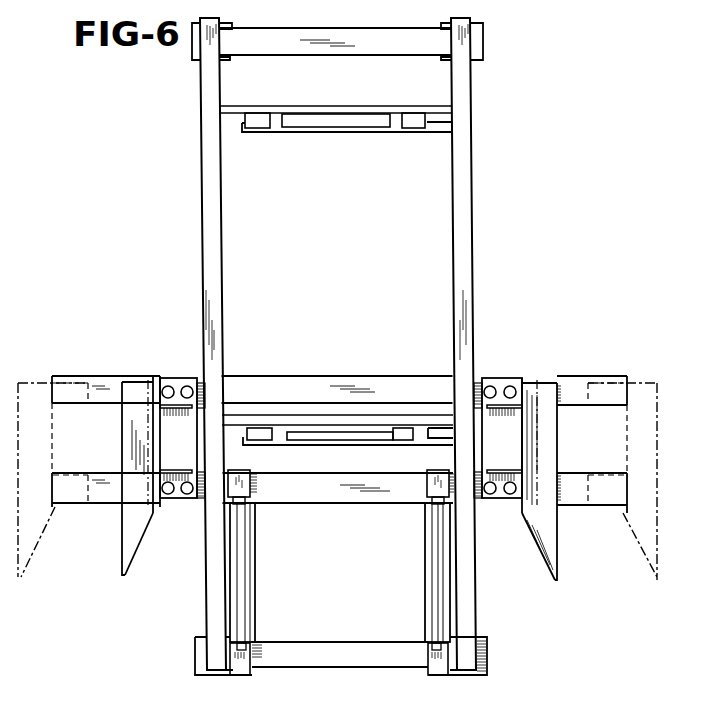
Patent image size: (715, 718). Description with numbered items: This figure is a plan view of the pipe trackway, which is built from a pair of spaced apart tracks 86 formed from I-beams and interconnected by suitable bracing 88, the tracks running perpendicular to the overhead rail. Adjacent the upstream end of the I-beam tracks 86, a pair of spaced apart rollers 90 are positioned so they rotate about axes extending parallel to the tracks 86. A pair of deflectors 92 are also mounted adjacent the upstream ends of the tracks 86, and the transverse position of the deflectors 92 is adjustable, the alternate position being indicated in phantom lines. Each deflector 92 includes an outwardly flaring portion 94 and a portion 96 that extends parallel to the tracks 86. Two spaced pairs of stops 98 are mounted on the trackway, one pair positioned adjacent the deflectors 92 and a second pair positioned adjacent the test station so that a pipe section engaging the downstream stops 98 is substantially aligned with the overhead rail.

The tracks 86 is at (205, 237).
The bracing 88 is at (328, 481).
The rollers 90 is at (247, 566).
The deflectors 92 is at (122, 533).
The outwardly flaring portion 94 is at (143, 547).
The portion extending parallel to tracks 96 is at (153, 432).
The stops 98 is at (262, 118).